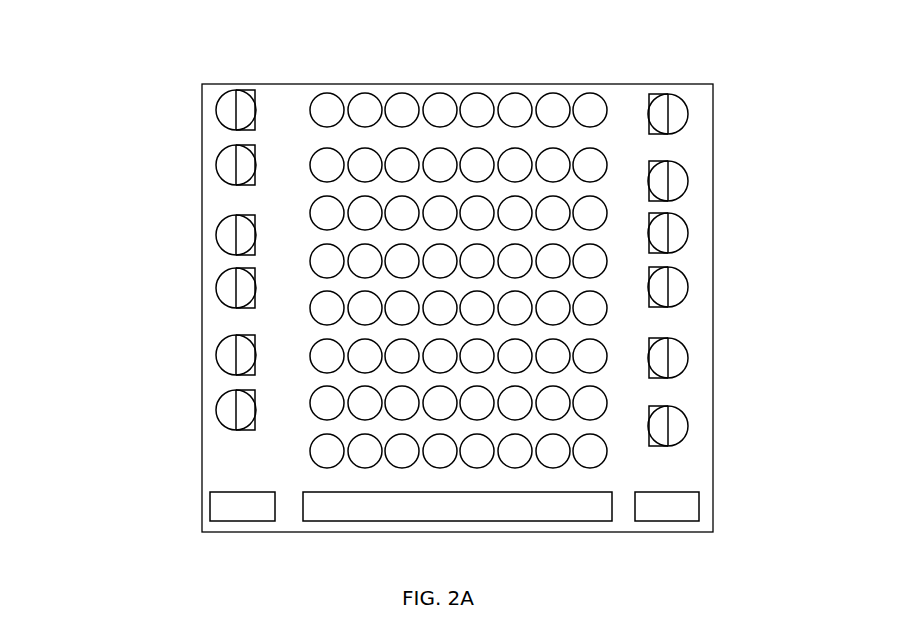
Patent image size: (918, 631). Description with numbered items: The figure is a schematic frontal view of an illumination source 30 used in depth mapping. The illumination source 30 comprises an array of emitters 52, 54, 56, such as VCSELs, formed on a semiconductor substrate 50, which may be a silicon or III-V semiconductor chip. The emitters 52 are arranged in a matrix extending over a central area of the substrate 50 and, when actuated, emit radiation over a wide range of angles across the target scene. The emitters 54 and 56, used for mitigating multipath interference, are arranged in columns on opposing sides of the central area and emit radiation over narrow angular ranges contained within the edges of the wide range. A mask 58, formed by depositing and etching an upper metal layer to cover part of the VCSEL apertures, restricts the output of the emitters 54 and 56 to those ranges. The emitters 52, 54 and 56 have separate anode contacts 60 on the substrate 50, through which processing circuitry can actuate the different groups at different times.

The illumination source 30 is at (102, 98).
The semiconductor substrate 50 is at (700, 352).
The emitters 52 is at (475, 103).
The emitters 54 is at (678, 290).
The emitters 56 is at (221, 219).
The mask 58 is at (248, 92).
The anode contacts 60 is at (473, 512).